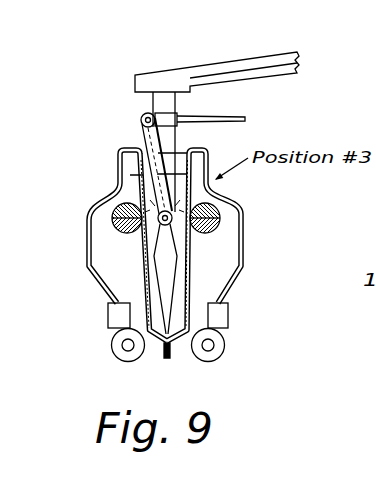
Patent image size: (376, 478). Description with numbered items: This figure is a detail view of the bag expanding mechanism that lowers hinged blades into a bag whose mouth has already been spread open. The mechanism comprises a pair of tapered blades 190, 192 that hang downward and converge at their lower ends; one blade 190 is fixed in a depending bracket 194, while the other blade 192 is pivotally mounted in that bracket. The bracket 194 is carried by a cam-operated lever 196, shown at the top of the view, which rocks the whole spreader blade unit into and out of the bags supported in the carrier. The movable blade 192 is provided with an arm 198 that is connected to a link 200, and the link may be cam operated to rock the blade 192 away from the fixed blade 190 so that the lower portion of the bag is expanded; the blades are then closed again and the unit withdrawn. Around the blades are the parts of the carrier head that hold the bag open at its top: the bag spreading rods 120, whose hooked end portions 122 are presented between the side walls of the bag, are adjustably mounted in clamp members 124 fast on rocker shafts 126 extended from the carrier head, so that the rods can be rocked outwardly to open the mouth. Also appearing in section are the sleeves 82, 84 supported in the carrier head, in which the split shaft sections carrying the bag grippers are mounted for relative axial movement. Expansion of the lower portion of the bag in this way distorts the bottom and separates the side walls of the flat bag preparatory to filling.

The cam-operated lever 196 is at (225, 62).
The depending bracket 194 is at (152, 98).
The link 200 is at (233, 115).
The hooked end portions 122 is at (132, 146).
The arm 198 is at (119, 175).
The sleeve 84 is at (115, 231).
The sleeve 82 is at (218, 230).
The tapered blade 190 is at (146, 265).
The tapered blade 192 is at (181, 274).
The bag spreading rod 120 is at (97, 276).
The clamp member 124 is at (113, 332).
The rocker shaft 126 is at (128, 348).